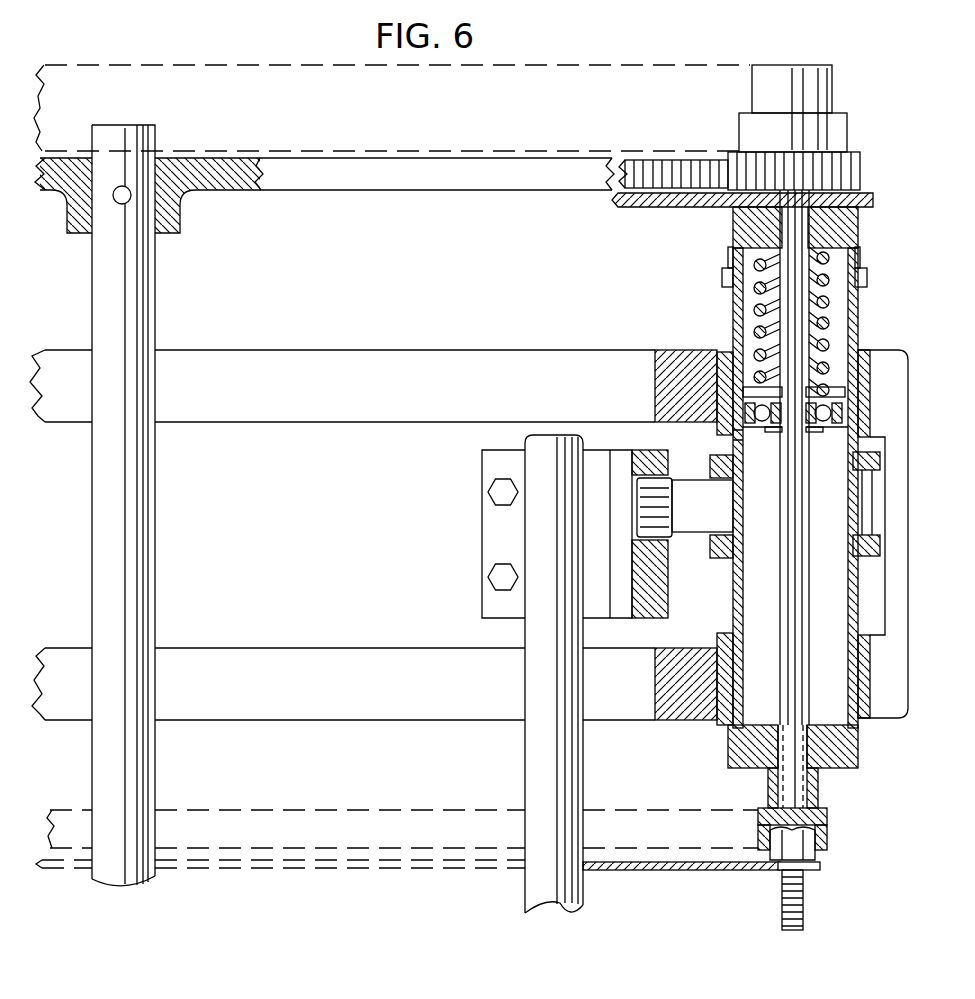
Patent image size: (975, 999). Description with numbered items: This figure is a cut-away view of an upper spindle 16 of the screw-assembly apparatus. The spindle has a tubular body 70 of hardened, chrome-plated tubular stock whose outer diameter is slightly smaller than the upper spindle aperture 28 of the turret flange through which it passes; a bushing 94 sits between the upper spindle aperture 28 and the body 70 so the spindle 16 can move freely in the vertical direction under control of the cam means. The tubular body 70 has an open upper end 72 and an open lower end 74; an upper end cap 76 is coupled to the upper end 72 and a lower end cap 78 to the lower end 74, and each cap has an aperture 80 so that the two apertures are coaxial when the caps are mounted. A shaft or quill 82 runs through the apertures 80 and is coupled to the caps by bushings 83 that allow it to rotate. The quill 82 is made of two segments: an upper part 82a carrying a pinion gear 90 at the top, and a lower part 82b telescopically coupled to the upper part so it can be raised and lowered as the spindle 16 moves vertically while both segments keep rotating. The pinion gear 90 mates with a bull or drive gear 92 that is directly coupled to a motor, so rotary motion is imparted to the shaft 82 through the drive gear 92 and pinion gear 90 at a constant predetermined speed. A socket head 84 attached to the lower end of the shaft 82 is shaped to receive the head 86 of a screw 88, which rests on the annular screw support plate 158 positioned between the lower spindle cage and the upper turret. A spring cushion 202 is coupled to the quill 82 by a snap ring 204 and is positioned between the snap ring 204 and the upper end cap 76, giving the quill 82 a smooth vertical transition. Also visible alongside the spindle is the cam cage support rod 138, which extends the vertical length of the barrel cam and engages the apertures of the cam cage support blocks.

The upper spindle 16 is at (768, 90).
The upper spindle aperture 28 is at (736, 366).
The tubular body 70 is at (858, 315).
The open upper end 72 is at (864, 289).
The open lower end 74 is at (827, 717).
The upper end cap 76 is at (845, 215).
The lower end cap 78 is at (858, 757).
The aperture 80 is at (745, 218).
The shaft or quill 82 is at (800, 492).
The upper shaft segment 82a is at (787, 460).
The lower shaft segment 82b is at (788, 783).
The bushing 83 is at (820, 783).
The socket head 84 is at (830, 815).
The screw head 86 is at (798, 845).
The screw 88 is at (800, 898).
The pinion gear 90 is at (852, 170).
The bull or drive gear 92 is at (655, 168).
The bushing 94 is at (866, 350).
The cam cage support rod 138 is at (535, 903).
The annular screw support plate 158 is at (613, 870).
The spring cushion 202 is at (748, 312).
The snap ring 204 is at (825, 438).